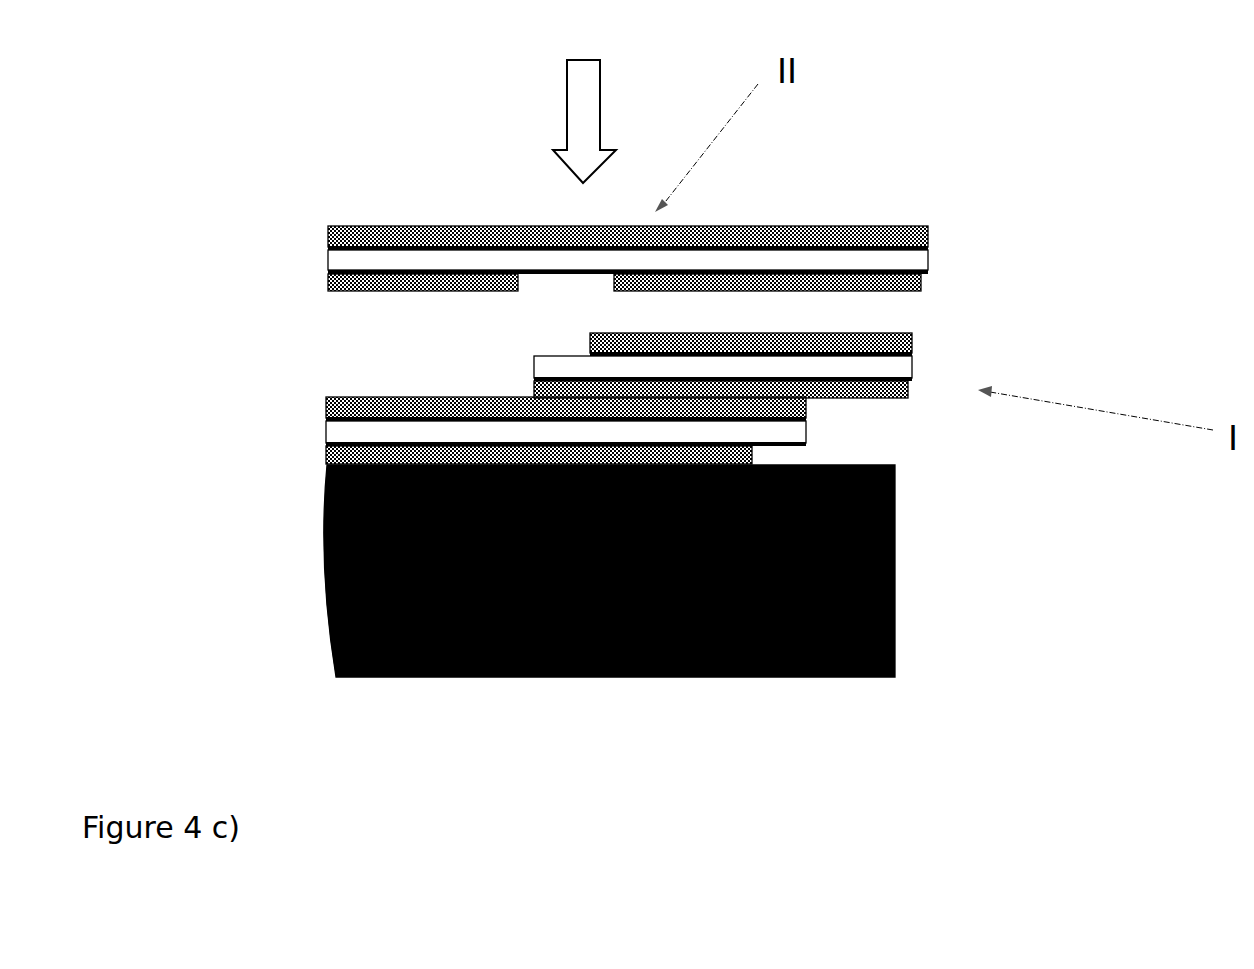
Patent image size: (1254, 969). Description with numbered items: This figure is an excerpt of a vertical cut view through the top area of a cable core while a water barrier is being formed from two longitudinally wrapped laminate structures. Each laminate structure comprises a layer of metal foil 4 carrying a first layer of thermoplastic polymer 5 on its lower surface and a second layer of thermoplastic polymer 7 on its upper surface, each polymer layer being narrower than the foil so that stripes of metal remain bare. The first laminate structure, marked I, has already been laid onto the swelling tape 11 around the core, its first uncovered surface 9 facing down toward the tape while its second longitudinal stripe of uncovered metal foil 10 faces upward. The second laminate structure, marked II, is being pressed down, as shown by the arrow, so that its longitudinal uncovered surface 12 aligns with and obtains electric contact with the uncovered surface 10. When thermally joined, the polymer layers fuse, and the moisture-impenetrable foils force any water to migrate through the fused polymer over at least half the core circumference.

The layer of metal foil 4 is at (812, 262).
The first layer of thermoplastic polymer 5 is at (887, 282).
The second layer of thermoplastic polymer 7 is at (743, 233).
The first uncovered surface 9 is at (772, 445).
The second longitudinal stripe of uncovered metal foil 10 is at (563, 352).
The swelling tape 11 is at (610, 600).
The longitudinal uncovered surface 12 is at (570, 272).